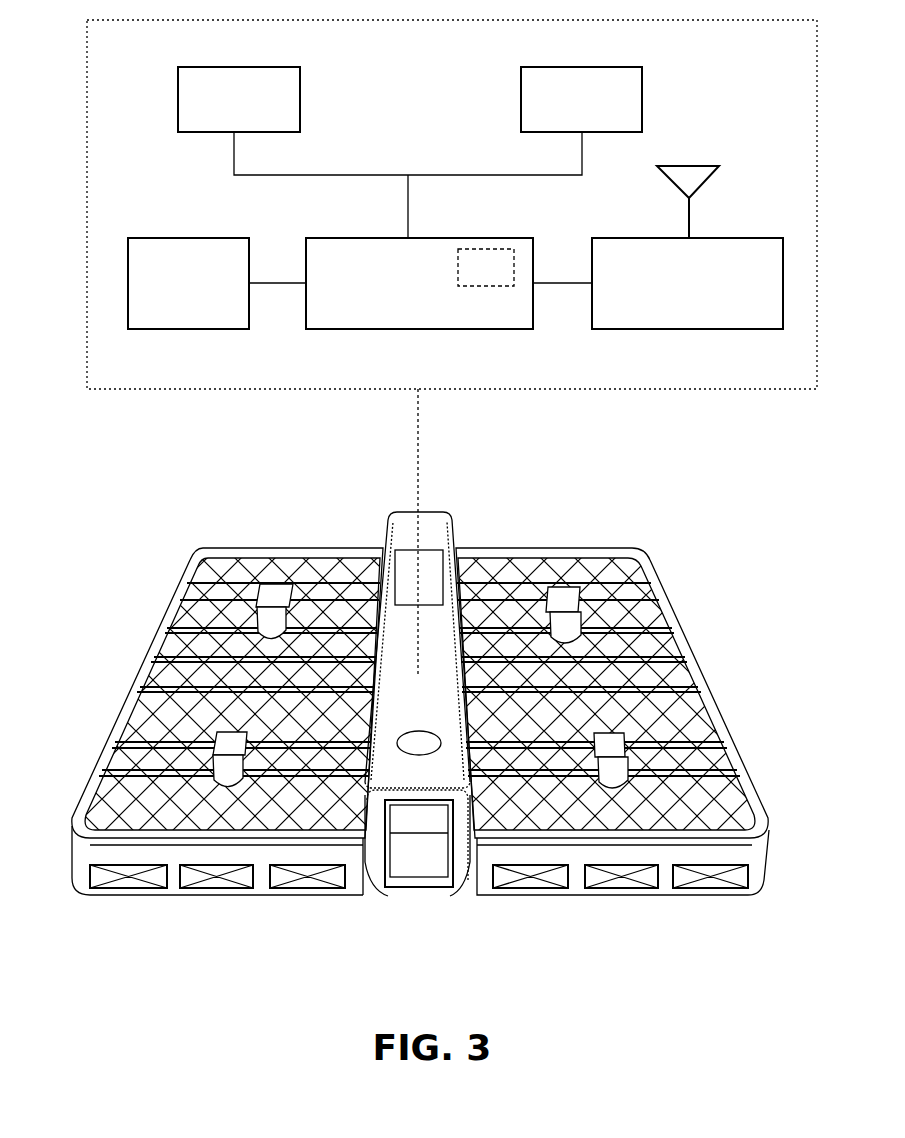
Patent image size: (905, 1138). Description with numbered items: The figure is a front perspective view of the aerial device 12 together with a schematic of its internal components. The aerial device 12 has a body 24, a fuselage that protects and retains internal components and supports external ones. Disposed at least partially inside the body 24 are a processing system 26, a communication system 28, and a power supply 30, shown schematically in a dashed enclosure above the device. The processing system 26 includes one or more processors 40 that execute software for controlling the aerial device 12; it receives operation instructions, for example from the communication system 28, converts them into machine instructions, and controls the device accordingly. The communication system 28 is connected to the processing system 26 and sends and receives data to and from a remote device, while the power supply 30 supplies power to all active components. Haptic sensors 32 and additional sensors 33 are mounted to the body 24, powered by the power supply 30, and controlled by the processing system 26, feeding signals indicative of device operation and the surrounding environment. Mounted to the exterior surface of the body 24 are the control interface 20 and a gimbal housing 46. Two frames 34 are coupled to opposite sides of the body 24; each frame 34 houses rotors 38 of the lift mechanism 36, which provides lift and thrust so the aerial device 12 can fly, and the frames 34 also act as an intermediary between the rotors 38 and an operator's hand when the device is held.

The aerial device 12 is at (610, 918).
The control interface 20 is at (395, 565).
The body 24 is at (515, 333).
The processing system 26 is at (388, 330).
The communication system 28 is at (740, 333).
The power supply 30 is at (128, 295).
The haptic sensors 32 is at (234, 67).
The additional sensors 33 is at (582, 67).
The frame 34 is at (140, 670).
The lift mechanism 36 is at (266, 621).
The rotors 38 is at (562, 622).
The processors 40 is at (472, 287).
The gimbal housing 46 is at (417, 857).